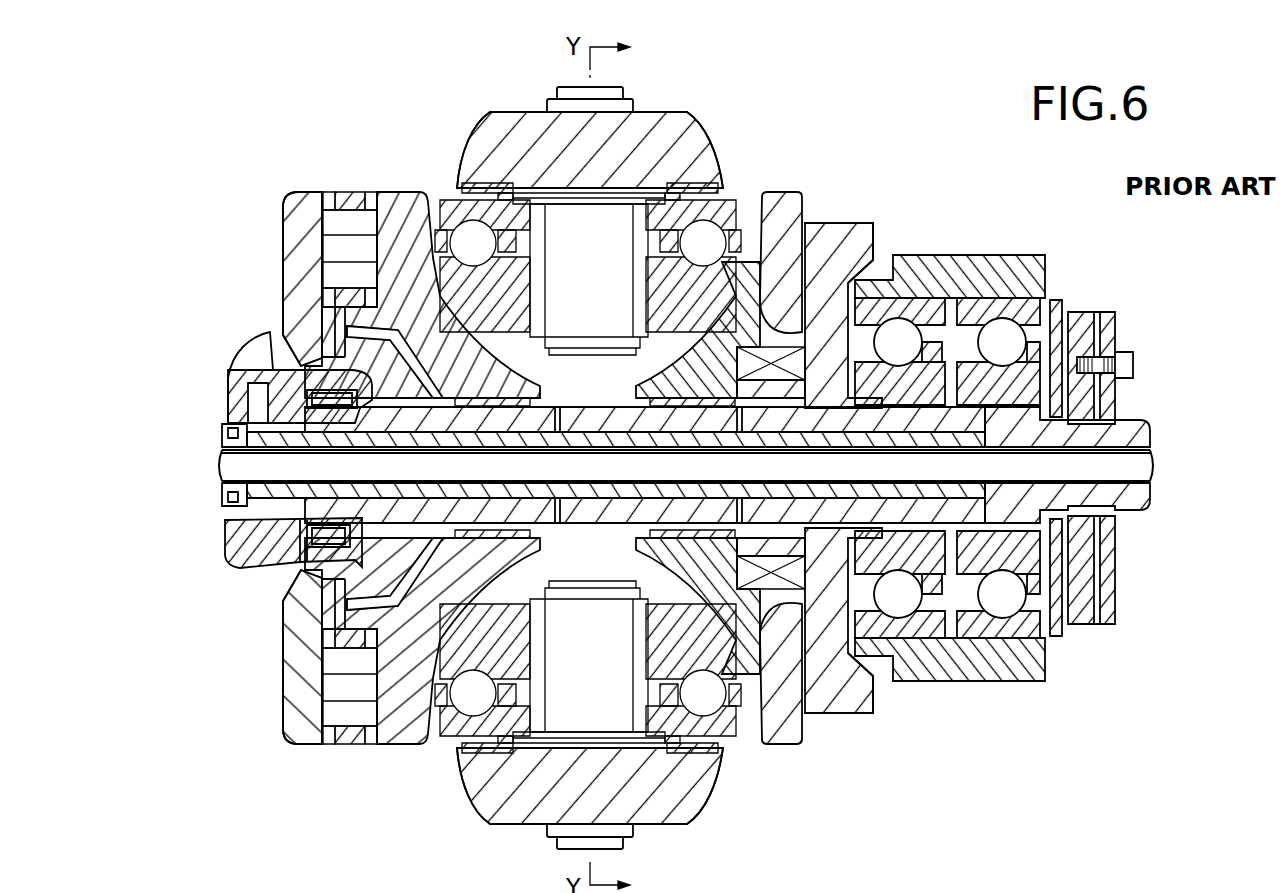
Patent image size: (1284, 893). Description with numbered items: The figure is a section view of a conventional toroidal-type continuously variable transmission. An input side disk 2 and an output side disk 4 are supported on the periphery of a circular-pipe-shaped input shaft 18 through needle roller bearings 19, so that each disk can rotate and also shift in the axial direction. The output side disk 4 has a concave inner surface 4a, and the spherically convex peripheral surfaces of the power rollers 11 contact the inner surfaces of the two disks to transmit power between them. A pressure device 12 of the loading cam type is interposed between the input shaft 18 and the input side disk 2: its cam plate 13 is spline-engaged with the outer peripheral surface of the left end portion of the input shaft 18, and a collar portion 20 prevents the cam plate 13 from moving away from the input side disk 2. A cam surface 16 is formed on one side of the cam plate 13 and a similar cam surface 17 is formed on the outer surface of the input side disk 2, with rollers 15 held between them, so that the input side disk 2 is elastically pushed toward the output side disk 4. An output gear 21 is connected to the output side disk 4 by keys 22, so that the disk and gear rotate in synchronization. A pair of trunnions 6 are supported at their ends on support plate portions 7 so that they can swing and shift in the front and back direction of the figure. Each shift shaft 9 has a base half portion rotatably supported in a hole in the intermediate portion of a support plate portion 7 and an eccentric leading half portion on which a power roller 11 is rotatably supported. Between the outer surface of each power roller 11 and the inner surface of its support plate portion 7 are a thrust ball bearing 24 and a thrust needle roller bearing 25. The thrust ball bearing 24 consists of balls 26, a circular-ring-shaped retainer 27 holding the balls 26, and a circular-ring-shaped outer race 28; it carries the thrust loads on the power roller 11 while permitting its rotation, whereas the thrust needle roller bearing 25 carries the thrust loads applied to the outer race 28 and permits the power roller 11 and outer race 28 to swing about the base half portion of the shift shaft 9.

The input side disk 2 is at (402, 192).
The output side disk 4 is at (797, 200).
The inner surface 4a is at (806, 262).
The trunnion 6 is at (675, 114).
The support plate portion 7 is at (520, 120).
The shift shaft 9 is at (628, 200).
The power roller 11 is at (512, 300).
The pressure device 12 is at (290, 272).
The cam plate 13 is at (288, 227).
The roller 15 is at (356, 215).
The cam surface 16 is at (328, 192).
The cam surface 17 is at (372, 192).
The input shaft 18 is at (1142, 432).
The needle roller bearing 19 is at (575, 402).
The collar portion 20 is at (252, 370).
The output gear 21 is at (864, 228).
The key 22 is at (775, 556).
The thrust ball bearing 24 is at (712, 192).
The thrust needle roller bearing 25 is at (690, 184).
The ball 26 is at (720, 238).
The retainer 27 is at (748, 250).
The outer race 28 is at (468, 228).